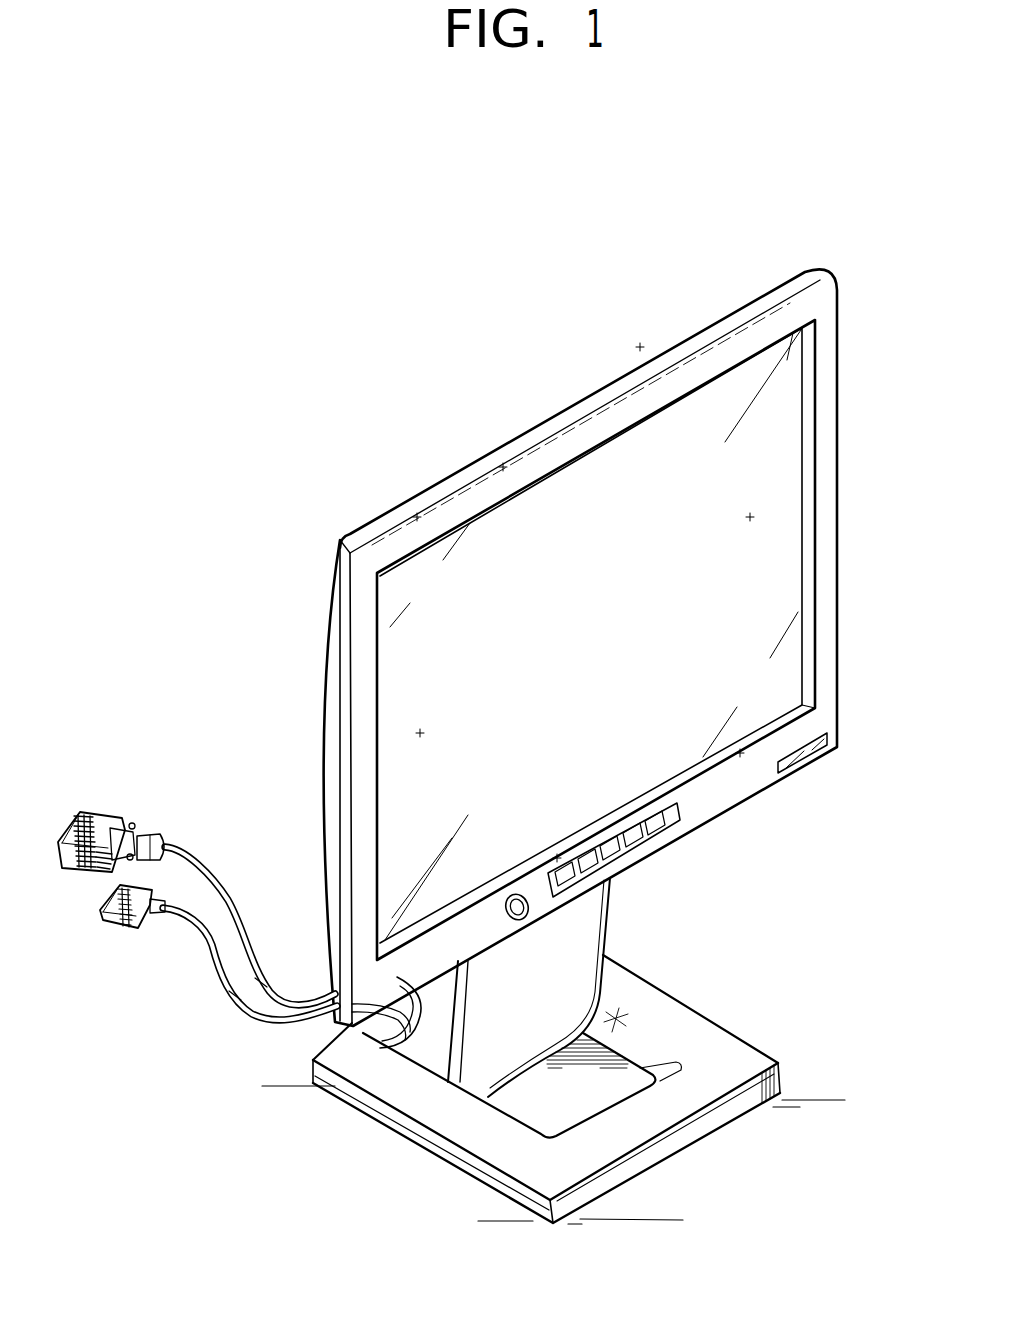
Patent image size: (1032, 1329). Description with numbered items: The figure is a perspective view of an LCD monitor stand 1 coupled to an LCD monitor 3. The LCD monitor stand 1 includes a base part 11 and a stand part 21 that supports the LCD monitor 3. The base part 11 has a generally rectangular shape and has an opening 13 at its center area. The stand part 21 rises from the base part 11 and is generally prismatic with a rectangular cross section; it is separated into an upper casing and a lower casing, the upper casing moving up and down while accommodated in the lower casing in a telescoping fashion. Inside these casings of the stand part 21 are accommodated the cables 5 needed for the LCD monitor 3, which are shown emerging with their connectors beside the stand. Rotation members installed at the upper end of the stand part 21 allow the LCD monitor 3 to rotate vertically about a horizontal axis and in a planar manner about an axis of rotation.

The LCD monitor stand 1 is at (753, 953).
The LCD monitor 3 is at (829, 464).
The cables 5 is at (238, 932).
The base part 11 is at (707, 1023).
The opening 13 is at (653, 1036).
The stand part 21 is at (607, 896).